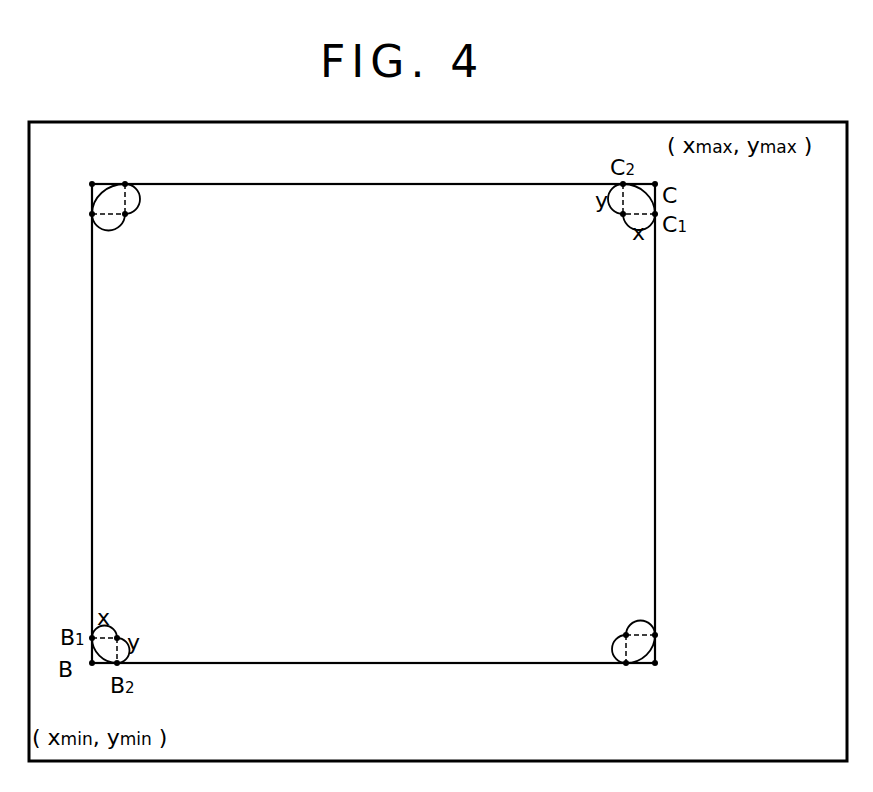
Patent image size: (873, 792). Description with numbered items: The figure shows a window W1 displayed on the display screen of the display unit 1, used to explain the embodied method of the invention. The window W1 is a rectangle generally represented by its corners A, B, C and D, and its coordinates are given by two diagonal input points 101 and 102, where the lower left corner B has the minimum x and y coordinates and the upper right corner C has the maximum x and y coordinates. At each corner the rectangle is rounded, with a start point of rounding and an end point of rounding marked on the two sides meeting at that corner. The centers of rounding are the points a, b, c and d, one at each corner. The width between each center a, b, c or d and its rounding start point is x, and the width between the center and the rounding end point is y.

The display unit 1 is at (653, 122).
The window W1 is at (382, 184).
The diagonal input point 101 is at (92, 184).
The diagonal input point 102 is at (659, 650).
The center of rounding a is at (125, 214).
The center of rounding b is at (117, 638).
The center of rounding c is at (623, 214).
The center of rounding d is at (626, 635).